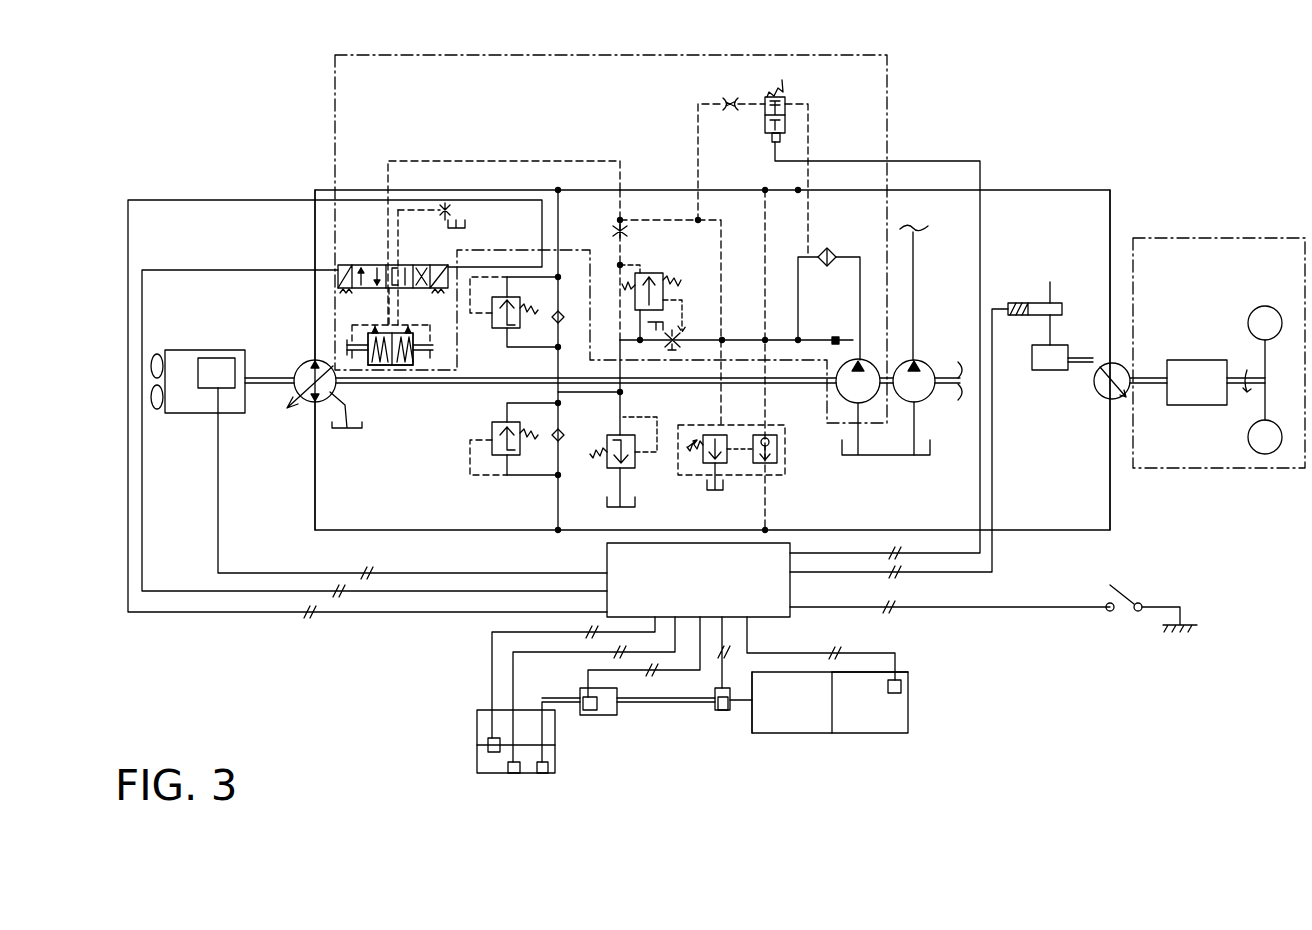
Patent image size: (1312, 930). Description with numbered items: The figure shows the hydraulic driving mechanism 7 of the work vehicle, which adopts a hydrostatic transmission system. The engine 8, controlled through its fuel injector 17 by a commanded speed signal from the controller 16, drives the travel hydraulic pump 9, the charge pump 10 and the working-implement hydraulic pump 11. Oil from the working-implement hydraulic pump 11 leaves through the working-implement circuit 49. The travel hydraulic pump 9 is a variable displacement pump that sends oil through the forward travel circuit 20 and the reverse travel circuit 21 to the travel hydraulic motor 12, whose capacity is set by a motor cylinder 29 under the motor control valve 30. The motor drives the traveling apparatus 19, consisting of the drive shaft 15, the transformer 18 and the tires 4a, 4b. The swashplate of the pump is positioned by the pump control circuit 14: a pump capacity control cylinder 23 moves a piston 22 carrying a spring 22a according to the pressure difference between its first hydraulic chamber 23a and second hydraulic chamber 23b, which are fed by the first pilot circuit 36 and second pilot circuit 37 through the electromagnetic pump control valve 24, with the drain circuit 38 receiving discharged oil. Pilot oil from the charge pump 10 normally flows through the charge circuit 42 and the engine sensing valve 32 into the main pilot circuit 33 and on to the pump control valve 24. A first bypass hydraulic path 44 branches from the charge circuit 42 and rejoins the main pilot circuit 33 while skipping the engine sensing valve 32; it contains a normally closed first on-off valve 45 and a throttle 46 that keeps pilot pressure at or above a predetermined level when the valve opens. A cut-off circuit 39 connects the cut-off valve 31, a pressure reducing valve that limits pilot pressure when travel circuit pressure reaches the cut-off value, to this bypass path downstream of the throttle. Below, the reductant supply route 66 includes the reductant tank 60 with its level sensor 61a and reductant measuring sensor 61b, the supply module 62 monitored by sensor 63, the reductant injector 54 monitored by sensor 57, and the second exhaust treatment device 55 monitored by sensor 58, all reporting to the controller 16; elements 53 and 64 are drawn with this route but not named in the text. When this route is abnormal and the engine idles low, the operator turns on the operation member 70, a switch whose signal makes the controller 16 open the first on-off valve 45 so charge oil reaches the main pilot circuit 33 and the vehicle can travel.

The tire 4a is at (1263, 306).
The tire 4b is at (1265, 437).
The hydraulic driving mechanism 7 is at (253, 183).
The engine 8 is at (183, 402).
The travel hydraulic pump 9 is at (302, 360).
The charge pump 10 is at (835, 398).
The working-implement hydraulic pump 11 is at (930, 403).
The travel hydraulic motor 12 is at (1108, 400).
The pump control circuit 14 is at (333, 127).
The drive shaft 15 is at (1155, 377).
The controller 16 is at (747, 618).
The fuel injector 17 is at (205, 362).
The transformer 18 is at (1200, 360).
The traveling apparatus 19 is at (1193, 238).
The forward travel circuit 20 is at (880, 530).
The reverse travel circuit 21 is at (670, 190).
The piston 22 is at (393, 365).
The spring 22a is at (367, 338).
The pump capacity control cylinder 23 is at (412, 368).
The first hydraulic chamber 23a is at (403, 365).
The second hydraulic chamber 23b is at (380, 365).
The pump control valve 24 is at (358, 265).
The motor cylinder 29 is at (1053, 370).
The motor control valve 30 is at (1034, 280).
The cut-off valve 31 is at (775, 477).
The engine sensing valve 32 is at (648, 273).
The main pilot circuit 33 is at (530, 158).
The first pilot circuit 36 is at (398, 305).
The second pilot circuit 37 is at (389, 305).
The drain circuit 38 is at (463, 217).
The cut-off circuit 39 is at (718, 405).
The charge circuit 42 is at (832, 252).
The first bypass hydraulic path 44 is at (812, 138).
The first on-off valve 45 is at (785, 98).
The throttle 46 is at (728, 98).
The working-implement circuit 49 is at (913, 318).
The brake pedal 53 is at (808, 724).
The reductant injector 54 is at (738, 708).
The second exhaust treatment device 55 is at (870, 724).
The sensor 57 is at (720, 710).
The sensor 58 is at (901, 687).
The reductant tank 60 is at (477, 763).
The level sensor 61a is at (488, 740).
The reductant measuring sensor 61b is at (517, 760).
The supply module 62 is at (613, 715).
The sensor 63 is at (587, 712).
The brake line 64 is at (663, 702).
The reductant supply route 66 is at (962, 733).
The operation member 70 is at (1143, 583).